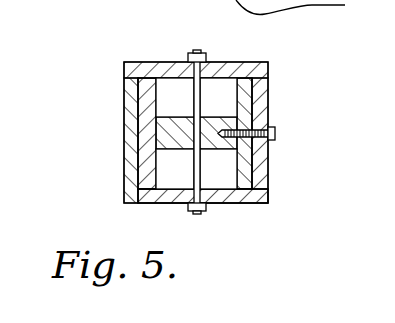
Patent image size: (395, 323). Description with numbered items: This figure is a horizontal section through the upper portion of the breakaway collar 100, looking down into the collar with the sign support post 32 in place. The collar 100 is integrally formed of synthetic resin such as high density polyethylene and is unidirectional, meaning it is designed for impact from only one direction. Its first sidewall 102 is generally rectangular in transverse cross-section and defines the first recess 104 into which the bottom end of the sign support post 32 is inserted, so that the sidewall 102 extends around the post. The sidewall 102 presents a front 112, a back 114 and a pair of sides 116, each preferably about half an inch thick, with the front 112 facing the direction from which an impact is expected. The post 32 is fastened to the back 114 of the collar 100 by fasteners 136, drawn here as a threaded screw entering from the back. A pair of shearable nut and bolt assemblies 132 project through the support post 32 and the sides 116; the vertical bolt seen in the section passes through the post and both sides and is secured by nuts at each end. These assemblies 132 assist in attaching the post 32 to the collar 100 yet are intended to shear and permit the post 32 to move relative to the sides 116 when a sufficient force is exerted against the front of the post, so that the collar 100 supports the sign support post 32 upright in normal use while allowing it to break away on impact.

The breakaway collar 100 is at (148, 67).
The first sidewall 102 is at (128, 117).
The sides 116 is at (171, 64).
The back 114 is at (262, 160).
The front 112 is at (135, 166).
The sign support post 32 is at (247, 98).
The first recess 104 is at (222, 188).
The shearable nut and bolt assemblies 132 is at (199, 214).
The fasteners 136 is at (277, 133).